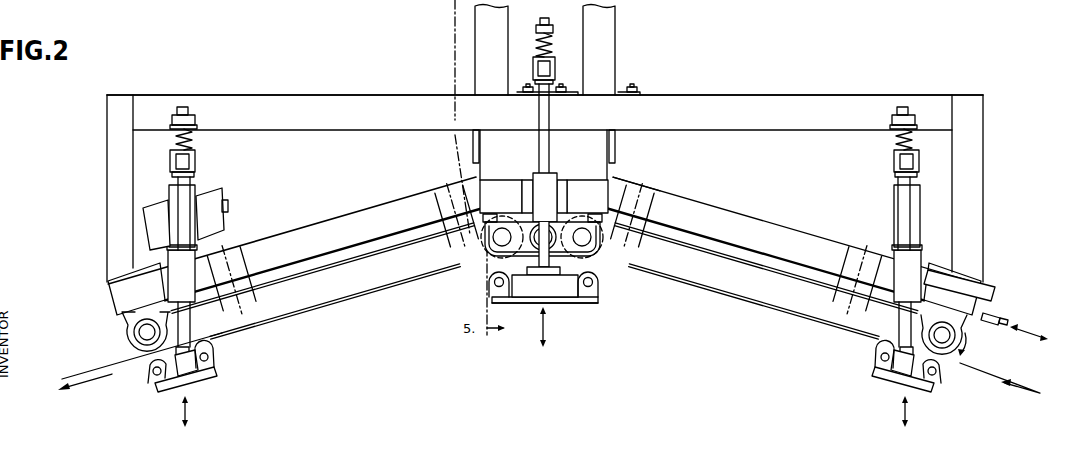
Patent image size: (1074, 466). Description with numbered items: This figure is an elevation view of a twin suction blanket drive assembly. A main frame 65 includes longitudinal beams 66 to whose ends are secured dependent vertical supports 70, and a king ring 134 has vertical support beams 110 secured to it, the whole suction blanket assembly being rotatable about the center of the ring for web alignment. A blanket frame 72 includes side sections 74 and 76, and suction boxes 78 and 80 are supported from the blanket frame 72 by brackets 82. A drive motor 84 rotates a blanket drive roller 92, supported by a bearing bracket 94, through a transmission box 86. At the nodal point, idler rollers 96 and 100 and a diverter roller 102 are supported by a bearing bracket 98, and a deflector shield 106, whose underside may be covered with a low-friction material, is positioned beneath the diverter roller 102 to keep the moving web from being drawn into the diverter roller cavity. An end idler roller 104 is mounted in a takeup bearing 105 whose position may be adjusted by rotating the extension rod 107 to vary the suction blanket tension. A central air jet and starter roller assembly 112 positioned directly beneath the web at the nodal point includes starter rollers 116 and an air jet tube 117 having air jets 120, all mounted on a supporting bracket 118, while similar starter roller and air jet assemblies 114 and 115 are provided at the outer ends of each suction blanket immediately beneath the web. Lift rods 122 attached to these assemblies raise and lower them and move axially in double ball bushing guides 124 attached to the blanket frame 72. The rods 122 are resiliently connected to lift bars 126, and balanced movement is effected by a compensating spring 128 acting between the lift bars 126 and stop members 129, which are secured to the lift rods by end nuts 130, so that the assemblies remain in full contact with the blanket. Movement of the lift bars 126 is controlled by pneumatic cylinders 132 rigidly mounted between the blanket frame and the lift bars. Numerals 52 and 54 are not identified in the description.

The frame 52 is at (817, 92).
The bottom rail 54 is at (394, 294).
The main frame 65 is at (697, 90).
The longitudinal beams 66 is at (797, 132).
The vertical supports 70 is at (107, 212).
The blanket frame 72 is at (652, 172).
The side section 74 is at (758, 219).
The side section 76 is at (335, 221).
The suction box 78 is at (727, 284).
The suction box 80 is at (362, 284).
The brackets 82 is at (244, 268).
The drive motor 84 is at (210, 188).
The transmission box 86 is at (142, 206).
The blanket drive roller 92 is at (128, 348).
The bearing bracket 94 is at (119, 323).
The idler roller 96 is at (487, 246).
The bearing bracket 98 is at (485, 213).
The idler roller 100 is at (547, 216).
The diverter roller 102 is at (570, 213).
The end idler roller 104 is at (965, 333).
The takeup bearing 105 is at (978, 302).
The deflector shield 106 is at (596, 243).
The extension rod 107 is at (1005, 320).
The vertical support beams 110 is at (615, 58).
The central air jet and starter roller assembly 112 is at (573, 305).
The starter roller and air jet assembly 114 is at (876, 376).
The starter roller and air jet assembly 115 is at (208, 380).
The starter rollers 116 is at (487, 294).
The air jet tube 117 is at (557, 327).
The supporting bracket 118 is at (508, 310).
The air jets 120 is at (545, 282).
The lift rods 122 is at (550, 150).
The double ball bushing guides 124 is at (557, 180).
The lift bars 126 is at (554, 70).
The compensating spring 128 is at (549, 44).
The stop members 129 is at (543, 30).
The end nuts 130 is at (188, 106).
The pneumatic cylinders 132 is at (197, 236).
The king ring 134 is at (520, 145).